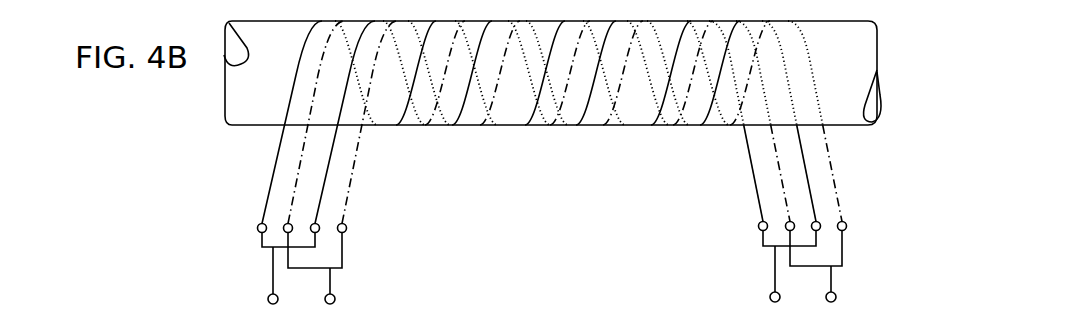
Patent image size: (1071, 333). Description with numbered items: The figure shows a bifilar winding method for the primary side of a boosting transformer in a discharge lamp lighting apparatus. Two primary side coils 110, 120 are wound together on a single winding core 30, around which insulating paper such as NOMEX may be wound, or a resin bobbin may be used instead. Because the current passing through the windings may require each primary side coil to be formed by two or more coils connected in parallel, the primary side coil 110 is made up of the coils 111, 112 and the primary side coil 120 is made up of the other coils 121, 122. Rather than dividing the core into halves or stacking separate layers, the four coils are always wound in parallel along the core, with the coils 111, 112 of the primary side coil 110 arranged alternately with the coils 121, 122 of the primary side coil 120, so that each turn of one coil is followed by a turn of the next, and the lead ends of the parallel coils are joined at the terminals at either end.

The winding core 30 is at (847, 125).
The primary side coil 110 is at (272, 277).
The coil 111 is at (273, 170).
The coil 112 is at (322, 202).
The primary side coil 120 is at (334, 277).
The coil 121 is at (298, 173).
The coil 122 is at (346, 205).